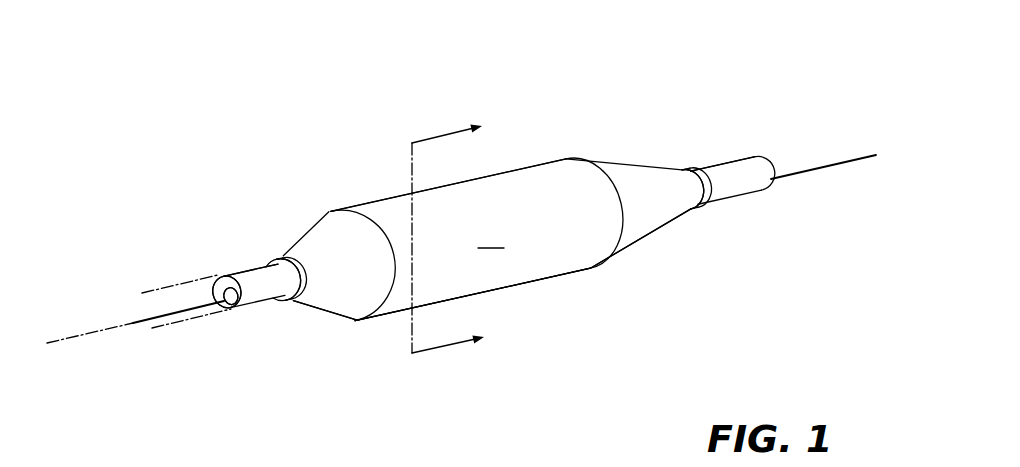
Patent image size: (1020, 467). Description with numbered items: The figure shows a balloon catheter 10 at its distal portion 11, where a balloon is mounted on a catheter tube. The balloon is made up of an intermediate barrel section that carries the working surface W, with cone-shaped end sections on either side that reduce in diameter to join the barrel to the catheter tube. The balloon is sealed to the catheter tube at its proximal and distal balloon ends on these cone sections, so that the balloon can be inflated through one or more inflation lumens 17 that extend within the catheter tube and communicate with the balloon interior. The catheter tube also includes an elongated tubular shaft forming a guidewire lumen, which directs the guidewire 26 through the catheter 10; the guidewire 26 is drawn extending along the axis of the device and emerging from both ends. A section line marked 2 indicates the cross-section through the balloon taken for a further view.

The catheter 10 is at (170, 99).
The distal portion 11 is at (342, 113).
The inflation lumen 17 is at (130, 301).
The guidewire 26 is at (137, 325).
The section line 2 is at (716, 251).
The working surface W is at (493, 232).